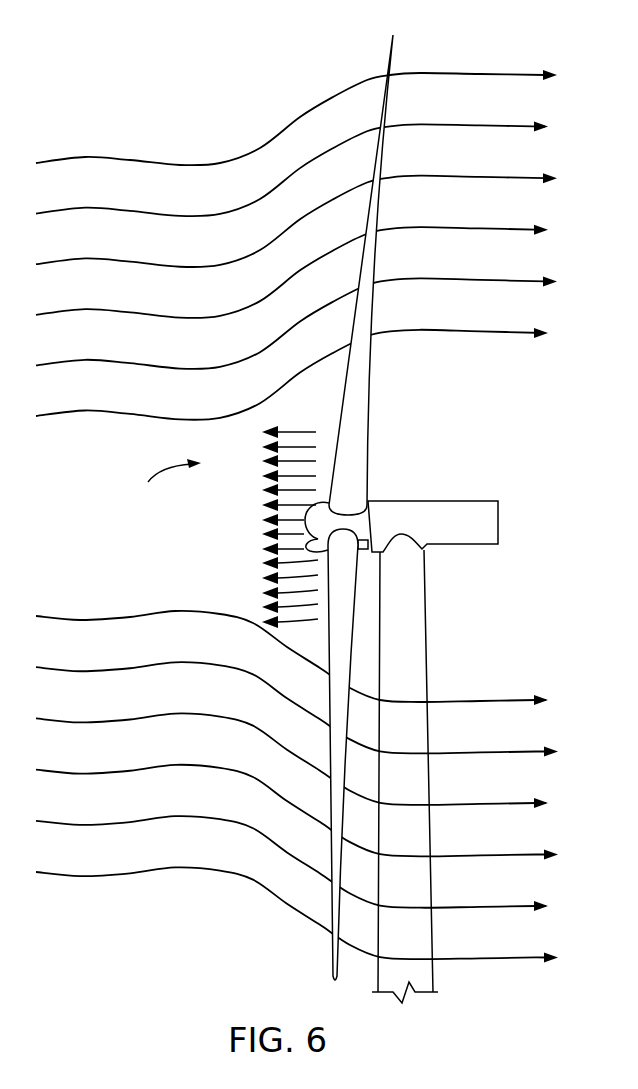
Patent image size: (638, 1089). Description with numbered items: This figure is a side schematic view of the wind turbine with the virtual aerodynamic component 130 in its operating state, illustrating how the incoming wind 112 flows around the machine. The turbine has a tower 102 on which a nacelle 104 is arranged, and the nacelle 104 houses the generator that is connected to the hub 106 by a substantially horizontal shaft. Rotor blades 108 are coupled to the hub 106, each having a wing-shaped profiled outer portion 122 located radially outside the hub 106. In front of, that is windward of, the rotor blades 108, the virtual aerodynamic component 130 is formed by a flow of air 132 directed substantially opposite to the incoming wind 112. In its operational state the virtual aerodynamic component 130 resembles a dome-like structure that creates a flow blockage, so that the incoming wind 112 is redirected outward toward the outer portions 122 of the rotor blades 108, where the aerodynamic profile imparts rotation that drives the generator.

The tower 102 is at (428, 656).
The nacelle 104 is at (475, 501).
The hub 106 is at (320, 528).
The rotor blades 108 is at (368, 412).
The incoming wind 112 is at (145, 163).
The outer portion of the rotor blade 122 is at (330, 967).
The virtual aerodynamic component 130 is at (164, 485).
The flow of air 132 is at (302, 434).